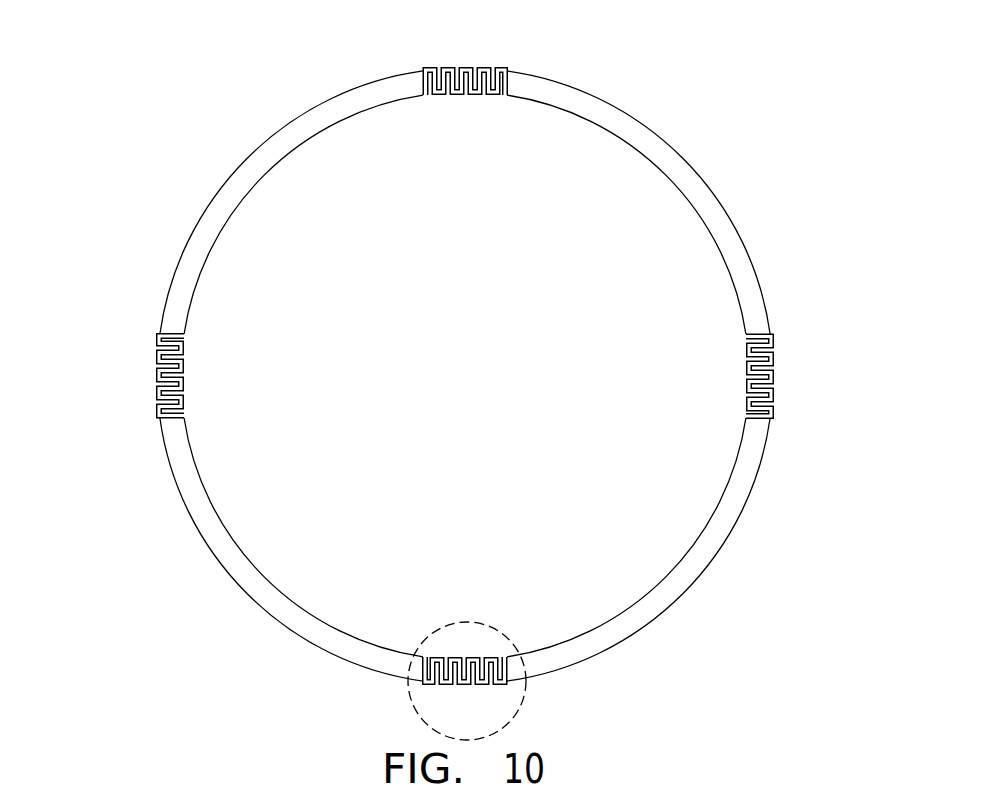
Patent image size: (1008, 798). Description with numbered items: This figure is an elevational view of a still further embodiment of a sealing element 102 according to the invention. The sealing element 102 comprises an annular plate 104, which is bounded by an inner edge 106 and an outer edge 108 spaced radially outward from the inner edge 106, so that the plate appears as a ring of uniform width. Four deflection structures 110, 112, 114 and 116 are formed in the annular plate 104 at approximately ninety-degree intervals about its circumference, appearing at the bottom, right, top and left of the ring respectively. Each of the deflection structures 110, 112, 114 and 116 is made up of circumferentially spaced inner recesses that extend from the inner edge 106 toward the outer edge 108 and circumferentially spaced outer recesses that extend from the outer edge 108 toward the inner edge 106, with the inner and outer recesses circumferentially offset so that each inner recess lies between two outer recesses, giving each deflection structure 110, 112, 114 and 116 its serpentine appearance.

The sealing element 102 is at (472, 376).
The annular plate 104 is at (481, 376).
The inner edge 106 is at (268, 170).
The outer edge 108 is at (266, 138).
The deflection structure 110 is at (436, 705).
The deflection structure 112 is at (806, 360).
The deflection structure 114 is at (486, 46).
The deflection structure 116 is at (139, 393).